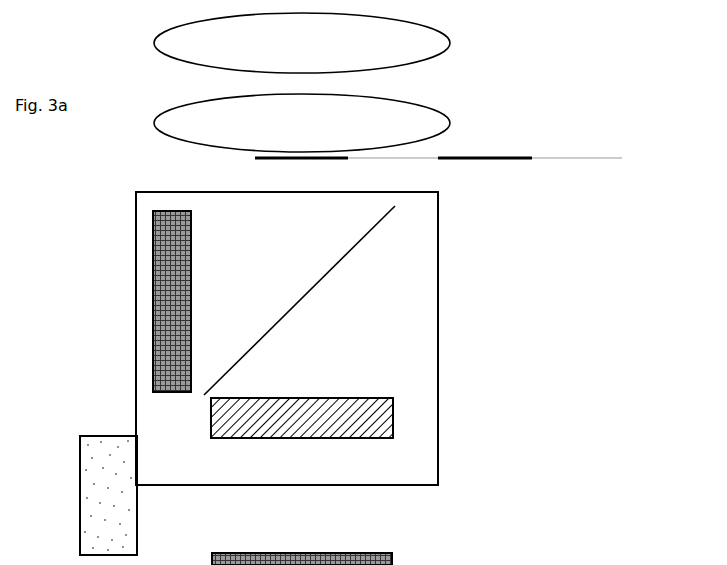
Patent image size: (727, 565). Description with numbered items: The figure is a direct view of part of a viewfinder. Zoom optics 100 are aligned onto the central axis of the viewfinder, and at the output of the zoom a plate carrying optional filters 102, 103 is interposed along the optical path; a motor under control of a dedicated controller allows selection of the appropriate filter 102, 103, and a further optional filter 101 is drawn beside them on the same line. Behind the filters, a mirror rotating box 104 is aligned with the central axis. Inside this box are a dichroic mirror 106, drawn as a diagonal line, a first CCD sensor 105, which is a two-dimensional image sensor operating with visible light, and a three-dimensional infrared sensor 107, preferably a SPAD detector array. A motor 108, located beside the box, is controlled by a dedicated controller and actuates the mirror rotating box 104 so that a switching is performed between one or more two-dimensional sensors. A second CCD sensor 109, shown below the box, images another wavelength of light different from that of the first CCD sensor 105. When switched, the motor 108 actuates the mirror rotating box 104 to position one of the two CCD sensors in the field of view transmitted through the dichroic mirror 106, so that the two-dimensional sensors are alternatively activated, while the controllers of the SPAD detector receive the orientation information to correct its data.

The zoom optics 100 is at (336, 82).
The optional filter 101 is at (575, 158).
The optional filter 102 is at (487, 158).
The optional filter 103 is at (255, 158).
The mirror rotating box 104 is at (438, 315).
The CCD sensor 105 is at (153, 315).
The dichroic mirror 106 is at (365, 235).
The 3D infrared sensor 107 is at (393, 402).
The motor 108 is at (80, 505).
The second CCD sensor 109 is at (365, 553).